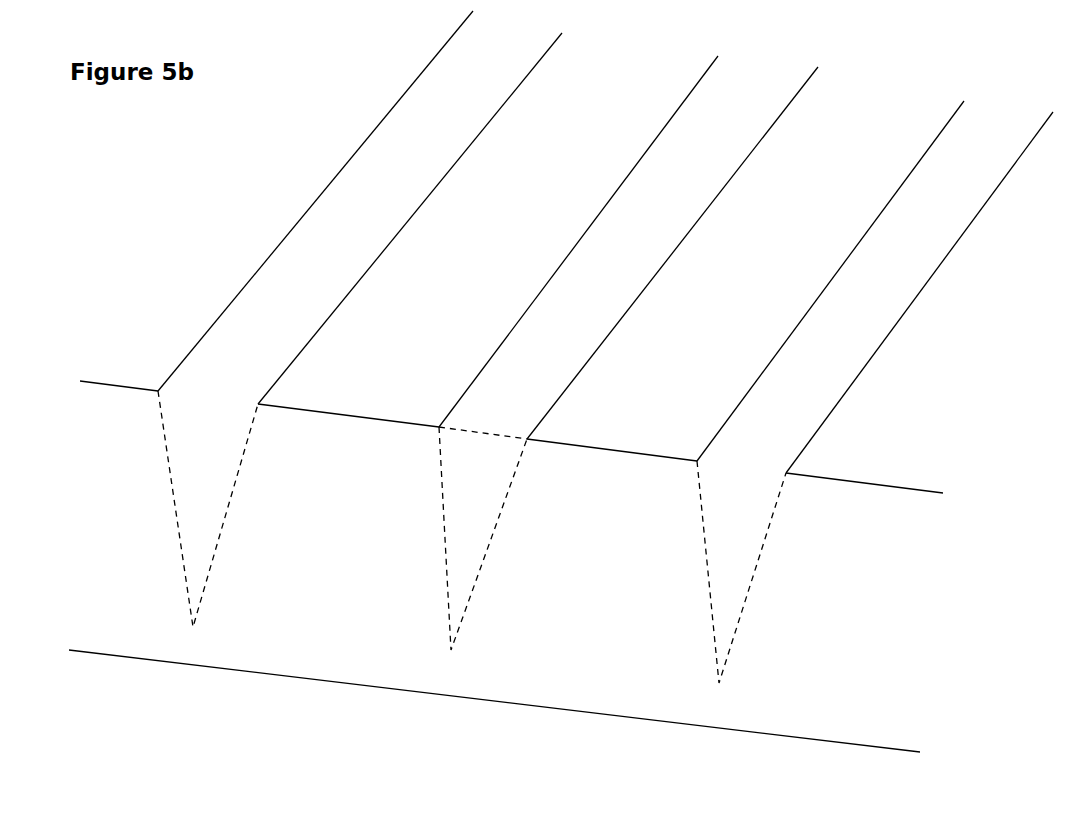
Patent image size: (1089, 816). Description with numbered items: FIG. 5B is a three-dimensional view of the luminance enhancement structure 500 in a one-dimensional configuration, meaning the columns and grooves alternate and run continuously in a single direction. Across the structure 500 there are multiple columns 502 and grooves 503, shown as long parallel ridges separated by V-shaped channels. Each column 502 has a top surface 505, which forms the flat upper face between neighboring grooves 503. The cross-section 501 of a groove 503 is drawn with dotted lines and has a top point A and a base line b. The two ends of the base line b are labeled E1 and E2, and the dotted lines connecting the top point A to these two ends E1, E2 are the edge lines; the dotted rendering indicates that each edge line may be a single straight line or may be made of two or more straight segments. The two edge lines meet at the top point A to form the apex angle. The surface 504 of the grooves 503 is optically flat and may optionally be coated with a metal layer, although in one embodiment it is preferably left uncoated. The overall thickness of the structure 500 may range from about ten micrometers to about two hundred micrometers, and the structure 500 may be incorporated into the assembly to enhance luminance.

The luminance enhancement structure 500 is at (215, 223).
The cross-section of the grooves 501 is at (474, 483).
The columns 502 is at (598, 527).
The grooves 503 is at (730, 552).
The surface of the grooves 504 is at (810, 350).
The top surface 505 is at (361, 413).
The end of the base line E1 is at (530, 437).
The end of the base line E2 is at (438, 424).
The base line b is at (483, 421).
The top point A is at (205, 627).